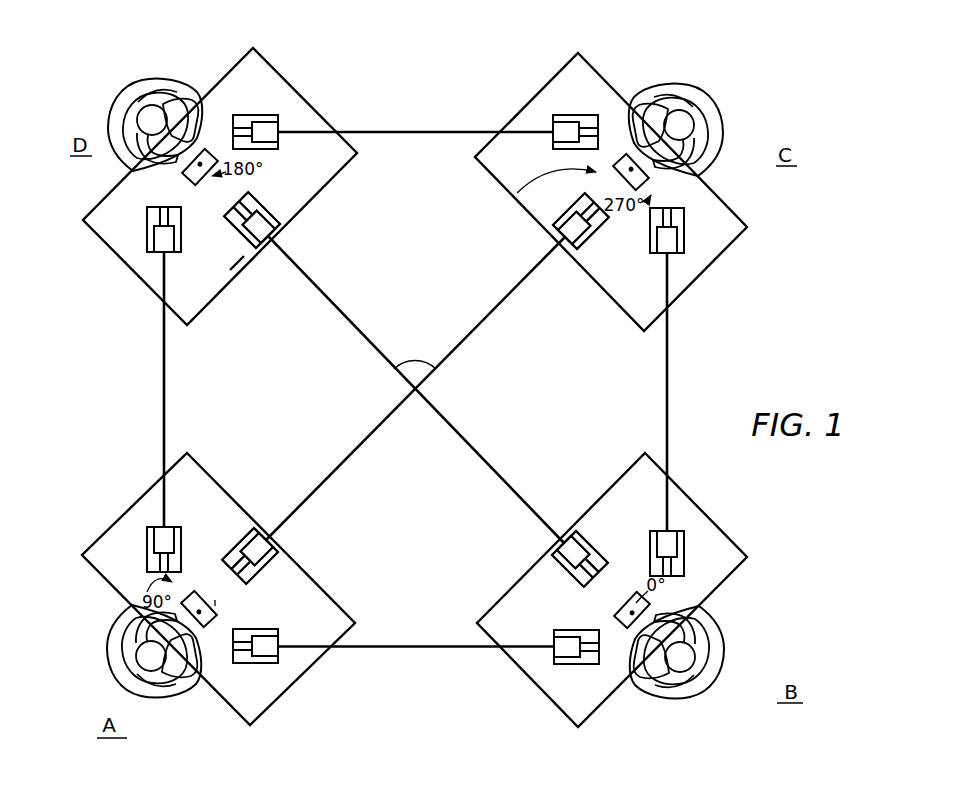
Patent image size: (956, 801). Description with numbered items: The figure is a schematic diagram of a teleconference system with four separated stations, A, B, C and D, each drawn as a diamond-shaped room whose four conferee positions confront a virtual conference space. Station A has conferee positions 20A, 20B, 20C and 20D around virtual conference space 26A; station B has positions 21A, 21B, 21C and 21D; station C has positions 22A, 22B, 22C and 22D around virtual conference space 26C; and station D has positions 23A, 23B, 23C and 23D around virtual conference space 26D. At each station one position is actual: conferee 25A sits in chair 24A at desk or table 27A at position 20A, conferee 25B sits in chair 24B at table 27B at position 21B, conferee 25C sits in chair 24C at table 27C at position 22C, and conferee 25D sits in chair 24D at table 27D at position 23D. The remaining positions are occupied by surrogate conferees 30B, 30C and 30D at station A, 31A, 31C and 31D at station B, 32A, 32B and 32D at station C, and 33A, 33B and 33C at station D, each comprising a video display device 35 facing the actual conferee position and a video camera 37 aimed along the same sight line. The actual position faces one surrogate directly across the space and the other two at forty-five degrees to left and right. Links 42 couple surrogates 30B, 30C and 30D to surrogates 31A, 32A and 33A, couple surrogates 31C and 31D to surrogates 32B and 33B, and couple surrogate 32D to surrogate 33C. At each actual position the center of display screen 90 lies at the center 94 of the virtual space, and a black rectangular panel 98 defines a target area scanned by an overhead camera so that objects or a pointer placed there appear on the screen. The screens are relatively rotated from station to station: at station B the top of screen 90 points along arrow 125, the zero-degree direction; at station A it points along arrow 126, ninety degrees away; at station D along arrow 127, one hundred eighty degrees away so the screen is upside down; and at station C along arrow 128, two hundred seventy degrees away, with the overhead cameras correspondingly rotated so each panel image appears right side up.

The actual conferee position 20A is at (117, 677).
The conferee position 20B is at (286, 659).
The conferee position 20C is at (282, 566).
The conferee position 20D is at (153, 524).
The conferee position 21A is at (543, 661).
The actual conferee position 21B is at (711, 680).
The conferee position 21C is at (703, 536).
The conferee position 21D is at (580, 556).
The conferee position 22A is at (545, 224).
The conferee position 22B is at (698, 283).
The conferee position 22C is at (708, 96).
The conferee position 22D is at (548, 104).
The conferee position 23A is at (124, 250).
The conferee position 23B is at (290, 207).
The conferee position 23C is at (285, 118).
The conferee position 23D is at (148, 93).
The chair 24A is at (173, 690).
The chair 24B is at (672, 698).
The chair 24C is at (662, 88).
The chair 24D is at (160, 82).
The conferee 25A is at (127, 647).
The conferee 25B is at (700, 648).
The conferee 25C is at (700, 135).
The conferee 25D is at (160, 95).
The virtual conference space 26A is at (213, 603).
The virtual conference space 26C is at (517, 193).
The virtual conference space 26D is at (209, 214).
The desk or table 27A is at (313, 586).
The desk or table 27B is at (585, 713).
The desk or table 27C is at (615, 290).
The desk or table 27D is at (92, 212).
The surrogate conferee 30B is at (278, 628).
The surrogate conferee 30C is at (270, 552).
The surrogate conferee 30D is at (175, 530).
The surrogate conferee 31A is at (558, 635).
The surrogate conferee 31C is at (678, 540).
The surrogate conferee 31D is at (570, 572).
The surrogate conferee 32A is at (560, 232).
The surrogate conferee 32B is at (660, 255).
The surrogate conferee 32D is at (565, 118).
The surrogate conferee 33A is at (147, 243).
The surrogate conferee 33B is at (270, 213).
The surrogate conferee 33C is at (273, 146).
The video display device 35 is at (274, 118).
The video camera 37 is at (273, 130).
The links 42 is at (415, 134).
The display device screen 90 is at (208, 147).
The center of virtual space 94 is at (198, 166).
The black rectangular panel 98 is at (192, 102).
The arrow 125 is at (612, 587).
The arrow 126 is at (148, 595).
The arrow 127 is at (215, 216).
The arrow 128 is at (657, 192).